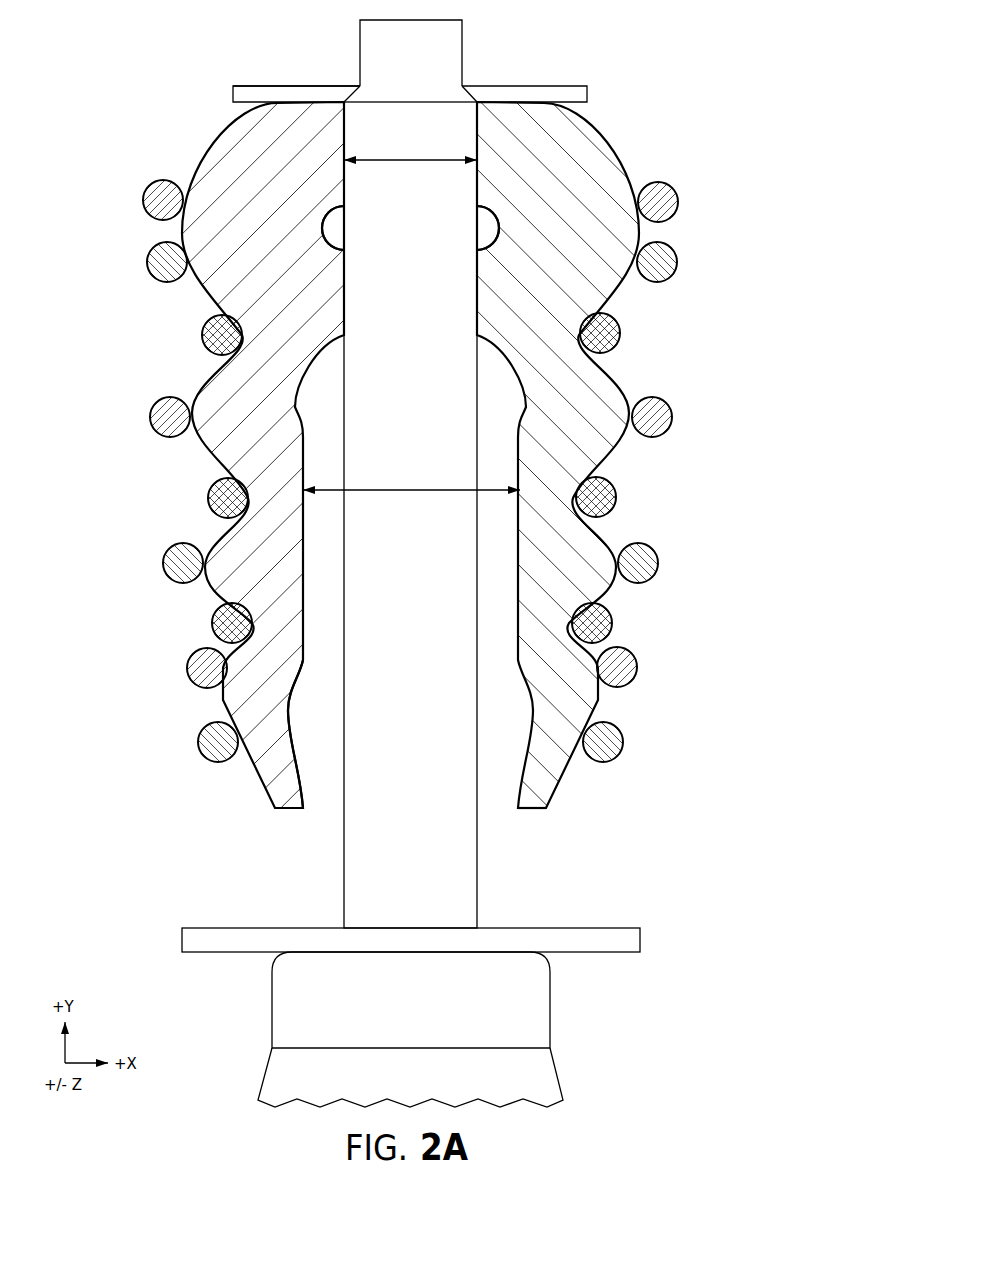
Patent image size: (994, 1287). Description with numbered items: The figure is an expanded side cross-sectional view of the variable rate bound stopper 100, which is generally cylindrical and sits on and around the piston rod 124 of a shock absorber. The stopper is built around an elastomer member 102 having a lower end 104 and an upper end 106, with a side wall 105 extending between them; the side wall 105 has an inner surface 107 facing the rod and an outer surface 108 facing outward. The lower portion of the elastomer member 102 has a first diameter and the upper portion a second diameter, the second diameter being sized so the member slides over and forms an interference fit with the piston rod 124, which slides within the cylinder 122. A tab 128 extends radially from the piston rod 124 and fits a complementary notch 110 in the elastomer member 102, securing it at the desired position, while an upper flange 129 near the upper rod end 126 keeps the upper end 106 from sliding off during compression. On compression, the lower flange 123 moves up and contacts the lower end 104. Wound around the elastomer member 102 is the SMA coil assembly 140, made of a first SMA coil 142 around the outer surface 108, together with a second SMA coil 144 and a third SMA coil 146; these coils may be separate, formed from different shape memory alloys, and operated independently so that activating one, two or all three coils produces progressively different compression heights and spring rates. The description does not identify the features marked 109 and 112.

The variable rate bound stopper 100 is at (441, 561).
The elastomer member 102 is at (374, 449).
The lower end 104 is at (535, 812).
The side wall 105 is at (238, 390).
The upper end 106 is at (533, 100).
The inner surface 107 is at (309, 660).
The outer surface 108 is at (198, 454).
The bore 109 is at (344, 127).
The notch 110 is at (500, 227).
The ring lobe 112 is at (675, 367).
The cylinder 122 is at (562, 1078).
The lower flange 123 is at (641, 937).
The piston rod 124 is at (424, 555).
The upper rod end 126 is at (462, 40).
The tab 128 is at (485, 230).
The upper flange 129 is at (258, 85).
The SMA coil assembly 140 is at (765, 180).
The first SMA coil 142 is at (143, 200).
The second SMA coil 144 is at (147, 262).
The third SMA coil 146 is at (202, 335).